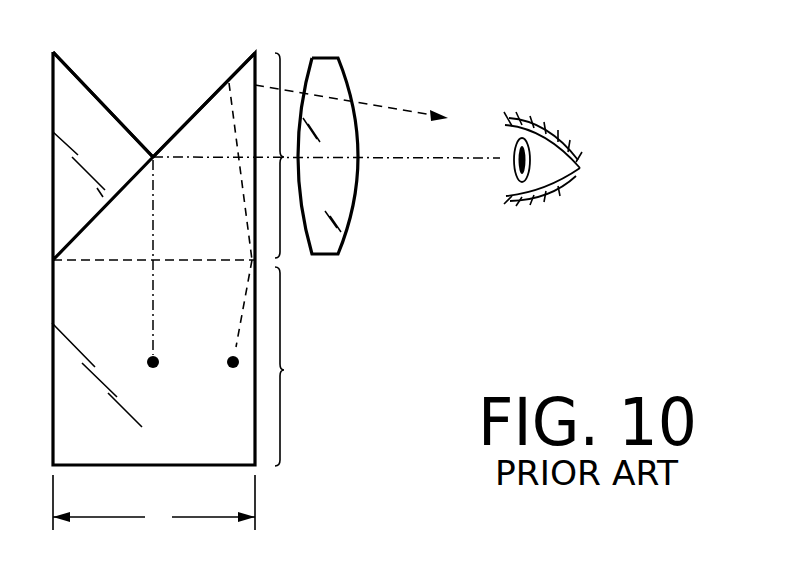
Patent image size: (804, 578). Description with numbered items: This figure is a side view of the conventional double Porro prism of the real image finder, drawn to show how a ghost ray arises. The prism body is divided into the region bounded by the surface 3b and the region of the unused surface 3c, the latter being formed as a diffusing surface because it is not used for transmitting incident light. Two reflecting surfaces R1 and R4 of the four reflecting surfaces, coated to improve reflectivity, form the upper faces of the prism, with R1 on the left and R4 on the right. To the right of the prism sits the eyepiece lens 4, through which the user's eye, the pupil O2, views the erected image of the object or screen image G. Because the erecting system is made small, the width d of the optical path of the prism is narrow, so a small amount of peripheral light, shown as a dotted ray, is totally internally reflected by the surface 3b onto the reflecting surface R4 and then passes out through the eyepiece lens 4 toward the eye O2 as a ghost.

The reflecting surface R1 is at (88, 89).
The reflecting surface R4 is at (200, 109).
The surface 3b is at (282, 85).
The unused surface 3c is at (193, 363).
The image (display image) G is at (237, 347).
The eyepiece lens 4 is at (346, 222).
The observer's eye / pupil O2 is at (420, 160).
The width of optical path d is at (154, 505).